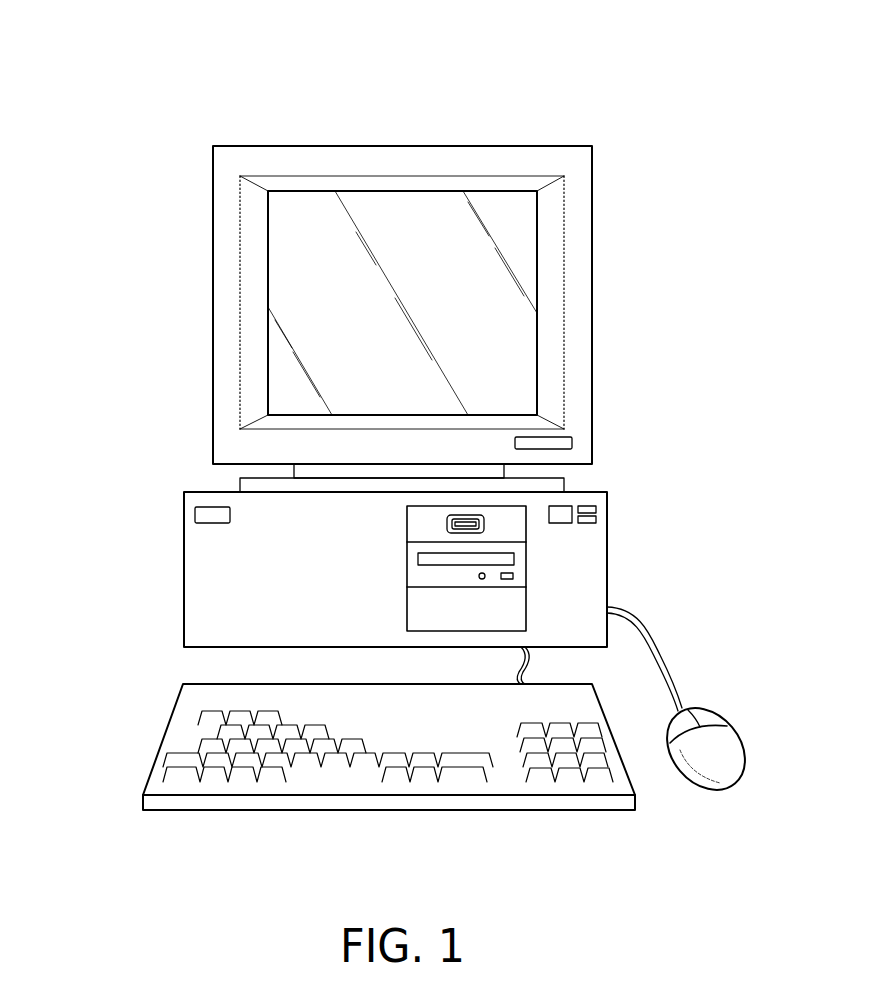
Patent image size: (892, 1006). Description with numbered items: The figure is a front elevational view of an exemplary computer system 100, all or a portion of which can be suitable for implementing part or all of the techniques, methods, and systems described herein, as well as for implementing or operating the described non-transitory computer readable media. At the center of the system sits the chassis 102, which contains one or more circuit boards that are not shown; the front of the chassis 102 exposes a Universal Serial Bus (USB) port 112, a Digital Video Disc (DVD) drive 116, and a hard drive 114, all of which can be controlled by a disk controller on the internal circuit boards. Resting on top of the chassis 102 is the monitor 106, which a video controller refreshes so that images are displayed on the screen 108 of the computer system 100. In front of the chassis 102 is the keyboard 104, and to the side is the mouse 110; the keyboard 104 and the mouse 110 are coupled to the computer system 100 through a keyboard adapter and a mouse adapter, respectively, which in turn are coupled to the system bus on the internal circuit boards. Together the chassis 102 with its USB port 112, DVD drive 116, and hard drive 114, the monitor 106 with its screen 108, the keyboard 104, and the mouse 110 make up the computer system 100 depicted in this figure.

The computer system 100 is at (587, 120).
The chassis 102 is at (184, 571).
The keyboard 104 is at (163, 738).
The monitor 106 is at (287, 146).
The screen 108 is at (318, 307).
The mouse 110 is at (725, 738).
The Universal Serial Bus (USB) port 112 is at (485, 520).
The hard drive 114 is at (516, 607).
The Digital Video Disc (DVD) drive 116 is at (515, 566).